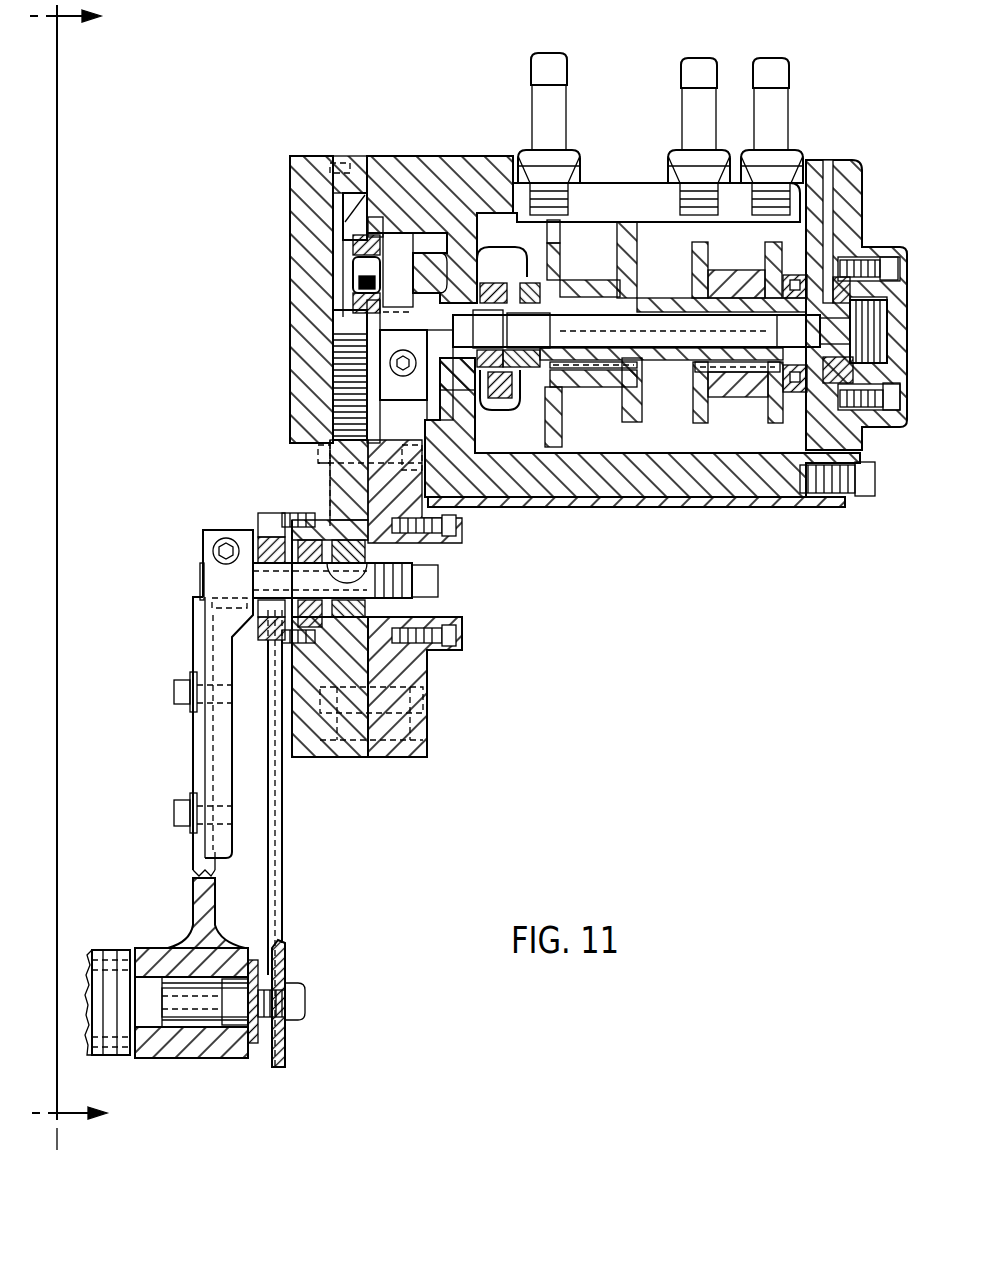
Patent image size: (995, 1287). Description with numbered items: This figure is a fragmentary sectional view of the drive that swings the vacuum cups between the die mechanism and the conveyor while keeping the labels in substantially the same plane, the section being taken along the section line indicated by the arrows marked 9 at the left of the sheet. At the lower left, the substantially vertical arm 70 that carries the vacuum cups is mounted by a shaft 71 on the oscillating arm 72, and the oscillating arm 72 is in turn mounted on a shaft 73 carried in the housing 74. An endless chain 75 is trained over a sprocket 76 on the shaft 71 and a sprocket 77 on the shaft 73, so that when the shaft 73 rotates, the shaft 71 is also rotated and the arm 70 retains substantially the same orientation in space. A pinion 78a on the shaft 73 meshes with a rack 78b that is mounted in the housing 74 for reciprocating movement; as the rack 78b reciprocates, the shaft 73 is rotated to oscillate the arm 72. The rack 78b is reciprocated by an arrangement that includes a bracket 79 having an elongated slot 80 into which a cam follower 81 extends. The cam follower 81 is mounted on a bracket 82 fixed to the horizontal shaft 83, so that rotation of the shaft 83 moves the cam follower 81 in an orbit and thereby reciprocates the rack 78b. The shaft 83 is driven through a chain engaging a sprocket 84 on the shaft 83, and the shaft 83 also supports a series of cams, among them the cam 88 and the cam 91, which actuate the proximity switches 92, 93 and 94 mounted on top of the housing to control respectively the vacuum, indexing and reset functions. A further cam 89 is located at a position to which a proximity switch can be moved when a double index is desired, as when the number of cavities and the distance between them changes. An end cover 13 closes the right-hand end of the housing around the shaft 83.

The section line 9- 9 is at (68, 579).
The end cover 13 is at (866, 217).
The arm 70 is at (122, 1050).
The shaft 71 is at (207, 1005).
The oscillating arm 72 is at (193, 860).
The shaft 73 is at (203, 578).
The housing 74 is at (430, 743).
The endless chain 75 is at (283, 852).
The sprocket 76 is at (285, 957).
The sprocket 77 is at (273, 515).
The pinion 78a is at (380, 627).
The rack 78b is at (335, 330).
The bracket 79 is at (343, 245).
The elongated slot 80 is at (350, 302).
The cam follower 81 is at (353, 272).
The bracket 82 is at (383, 368).
The shaft 83 is at (465, 225).
The sprocket 84 is at (483, 370).
The cam 88 is at (555, 490).
The cam 89 is at (636, 400).
The cam 91 is at (782, 425).
The proximity switch 92 is at (550, 118).
The proximity switch 93 is at (703, 100).
The proximity switch 94 is at (778, 110).